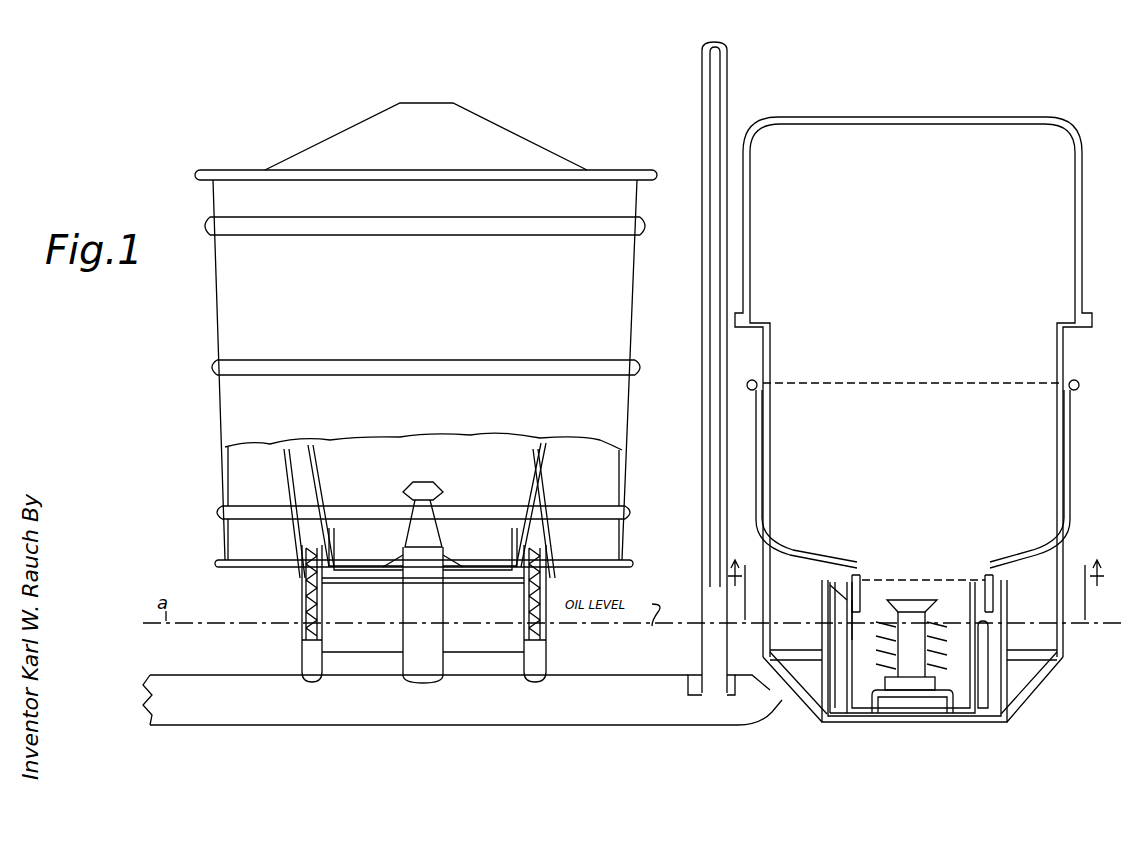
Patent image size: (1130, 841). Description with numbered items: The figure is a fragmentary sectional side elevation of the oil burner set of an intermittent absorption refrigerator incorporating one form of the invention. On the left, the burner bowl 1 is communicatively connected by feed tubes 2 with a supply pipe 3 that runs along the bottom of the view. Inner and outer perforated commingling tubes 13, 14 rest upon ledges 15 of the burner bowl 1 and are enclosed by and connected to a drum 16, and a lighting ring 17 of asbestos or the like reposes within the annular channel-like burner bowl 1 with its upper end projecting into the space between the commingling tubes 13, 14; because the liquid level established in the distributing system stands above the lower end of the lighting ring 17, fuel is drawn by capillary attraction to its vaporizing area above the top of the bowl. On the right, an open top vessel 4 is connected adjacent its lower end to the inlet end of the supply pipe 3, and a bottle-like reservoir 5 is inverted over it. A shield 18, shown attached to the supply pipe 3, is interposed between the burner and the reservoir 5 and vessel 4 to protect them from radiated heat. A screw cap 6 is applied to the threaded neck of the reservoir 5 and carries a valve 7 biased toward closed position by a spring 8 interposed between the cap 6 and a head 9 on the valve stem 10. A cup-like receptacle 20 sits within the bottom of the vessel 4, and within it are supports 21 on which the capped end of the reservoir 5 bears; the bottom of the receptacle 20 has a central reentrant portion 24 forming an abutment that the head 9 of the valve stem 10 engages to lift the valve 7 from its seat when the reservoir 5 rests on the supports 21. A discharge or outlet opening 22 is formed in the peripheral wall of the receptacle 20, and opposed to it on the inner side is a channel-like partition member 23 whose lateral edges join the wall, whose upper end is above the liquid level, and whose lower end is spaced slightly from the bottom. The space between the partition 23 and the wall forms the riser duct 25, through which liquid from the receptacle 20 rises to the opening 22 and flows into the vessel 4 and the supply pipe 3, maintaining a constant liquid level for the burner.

The burner bowl 1 is at (302, 610).
The feed tubes 2 is at (302, 656).
The supply pipe 3 is at (462, 700).
The open top vessel 4 is at (1060, 565).
The reservoir 5 is at (1062, 258).
The screw cap 6 is at (990, 578).
The valve 7 is at (910, 578).
The spring 8 is at (930, 648).
The head 9 is at (934, 684).
The valve stem 10 is at (896, 636).
The inner perforated commingling tube 13 is at (314, 481).
The outer perforated commingling tube 14 is at (286, 481).
The ledges 15 is at (300, 576).
The drum 16 is at (625, 277).
The lighting ring 17 is at (545, 545).
The shield 18 is at (700, 428).
The cup-like receptacle 20 is at (1000, 615).
The supports 21 is at (975, 640).
The discharge or outlet opening 22 is at (830, 615).
The channel-like partition member 23 is at (872, 665).
The central reentrant portion 24 is at (945, 712).
The riser duct 25 is at (832, 676).